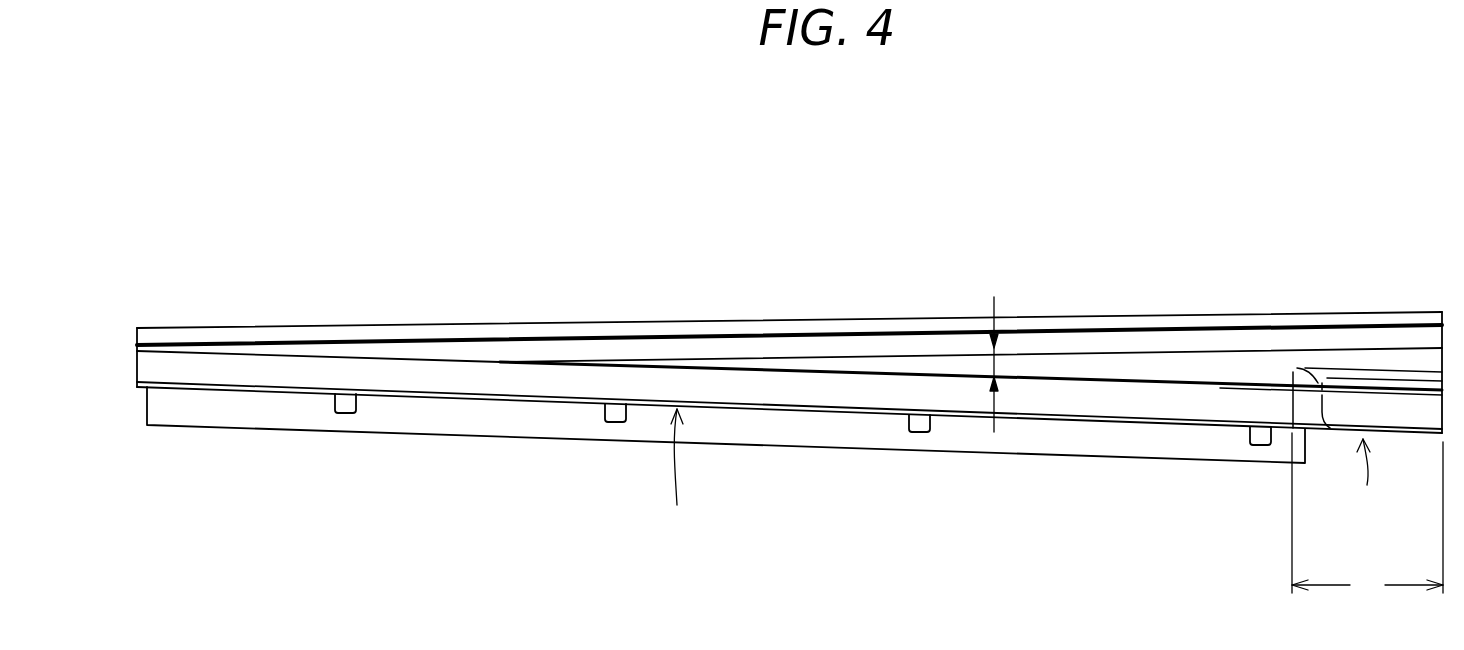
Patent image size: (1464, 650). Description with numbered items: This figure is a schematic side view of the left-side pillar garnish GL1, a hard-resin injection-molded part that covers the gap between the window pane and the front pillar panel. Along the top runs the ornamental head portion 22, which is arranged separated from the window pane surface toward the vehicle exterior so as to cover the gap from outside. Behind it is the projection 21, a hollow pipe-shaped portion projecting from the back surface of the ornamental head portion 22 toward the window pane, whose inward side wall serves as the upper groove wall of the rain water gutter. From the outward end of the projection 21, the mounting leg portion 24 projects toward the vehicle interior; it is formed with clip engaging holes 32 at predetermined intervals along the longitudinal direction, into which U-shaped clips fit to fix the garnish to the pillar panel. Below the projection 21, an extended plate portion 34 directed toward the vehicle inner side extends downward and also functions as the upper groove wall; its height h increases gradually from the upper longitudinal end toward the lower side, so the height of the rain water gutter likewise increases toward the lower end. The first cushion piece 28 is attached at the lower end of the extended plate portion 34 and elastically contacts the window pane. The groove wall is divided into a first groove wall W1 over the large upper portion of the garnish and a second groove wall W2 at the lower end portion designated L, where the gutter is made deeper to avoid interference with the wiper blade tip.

The pillar garnish GL1 is at (378, 318).
The projection 21 is at (840, 346).
The ornamental head portion 22 is at (711, 328).
The mounting leg portion 24 is at (782, 427).
The first cushion piece 28 is at (1130, 405).
The clip engaging hole 32 is at (345, 410).
The extended plate portion 34 is at (1138, 367).
The height of extended plate portion h is at (997, 367).
The first groove wall W1 is at (690, 474).
The second groove wall W2 is at (1376, 484).
The lower end portion L is at (1367, 519).